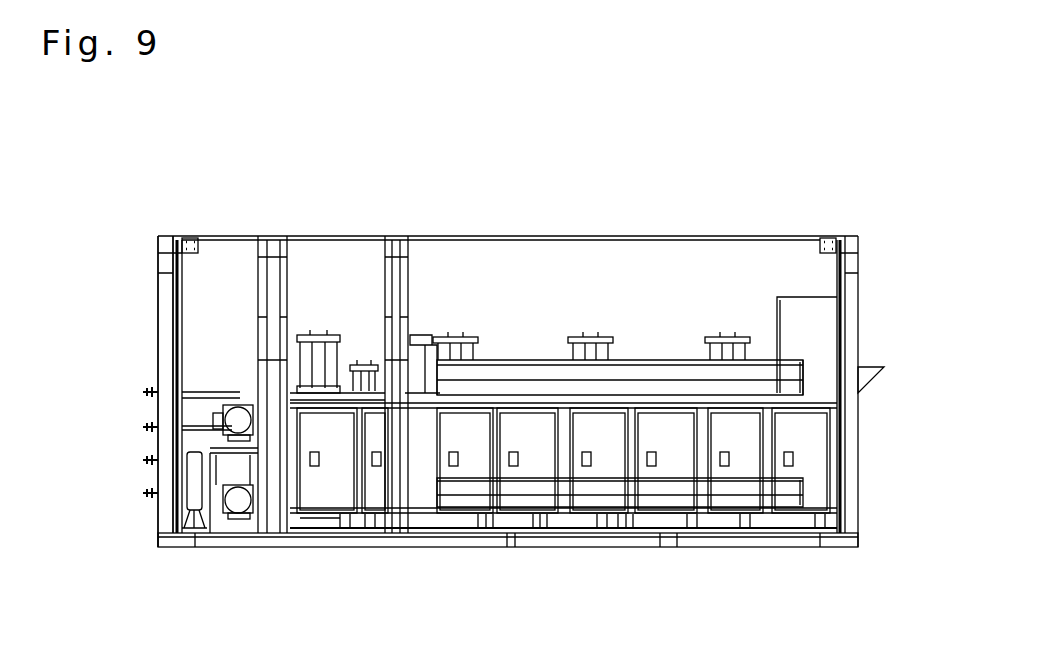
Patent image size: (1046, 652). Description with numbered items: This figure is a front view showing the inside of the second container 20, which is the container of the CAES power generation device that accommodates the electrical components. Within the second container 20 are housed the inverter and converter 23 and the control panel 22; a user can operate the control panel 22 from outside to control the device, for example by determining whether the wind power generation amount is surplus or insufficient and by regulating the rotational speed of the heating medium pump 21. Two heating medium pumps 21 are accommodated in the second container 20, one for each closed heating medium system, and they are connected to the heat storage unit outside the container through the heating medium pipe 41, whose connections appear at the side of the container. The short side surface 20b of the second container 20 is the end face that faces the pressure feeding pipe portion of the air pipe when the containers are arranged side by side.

The second container 20 is at (778, 217).
The short side surface 20b is at (150, 320).
The heating medium pump 21 is at (242, 402).
The control panel 22 is at (817, 323).
The inverter and converter 23 is at (592, 430).
The heating medium pipe 41 is at (143, 427).